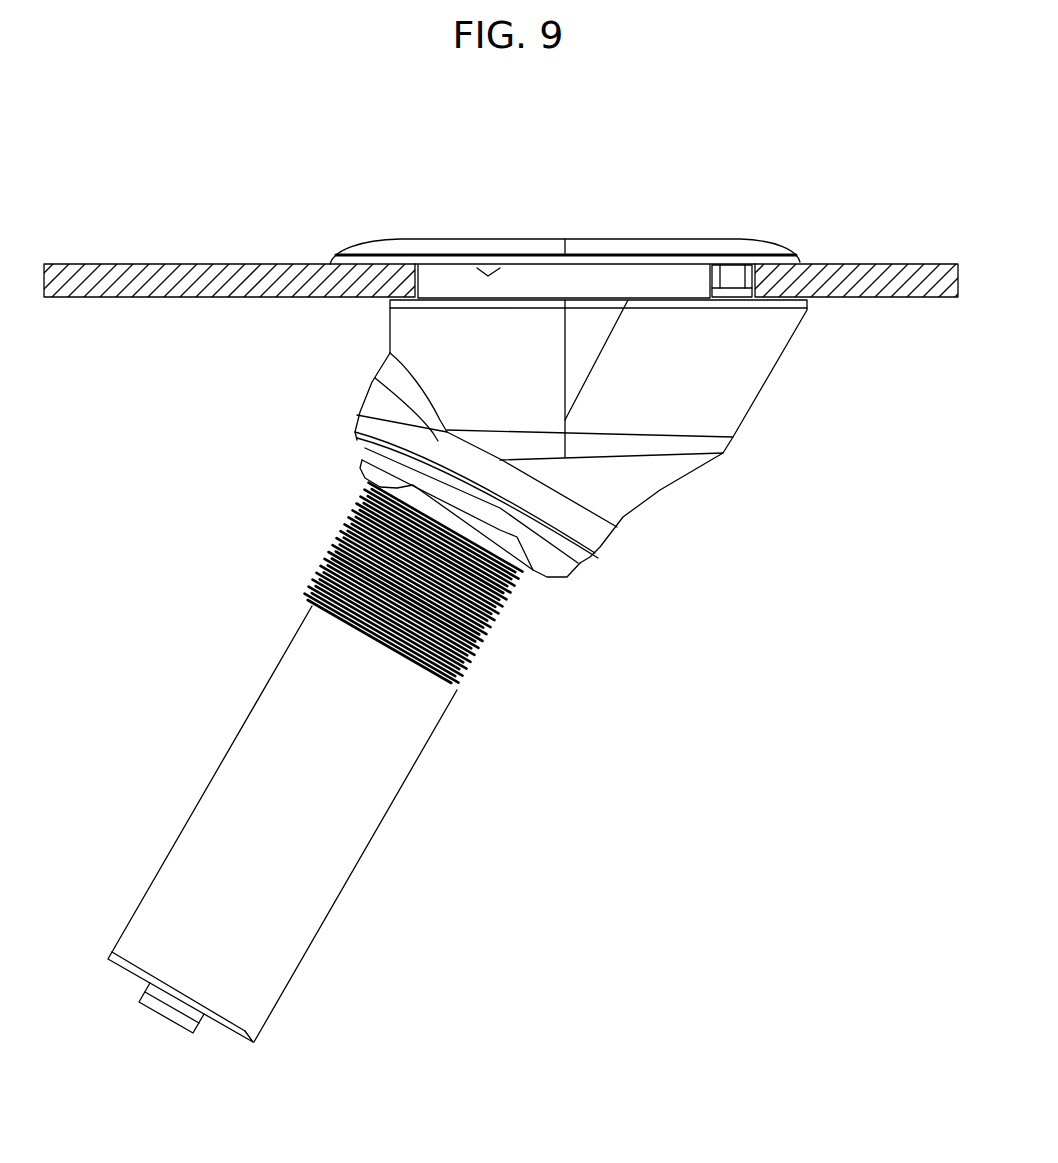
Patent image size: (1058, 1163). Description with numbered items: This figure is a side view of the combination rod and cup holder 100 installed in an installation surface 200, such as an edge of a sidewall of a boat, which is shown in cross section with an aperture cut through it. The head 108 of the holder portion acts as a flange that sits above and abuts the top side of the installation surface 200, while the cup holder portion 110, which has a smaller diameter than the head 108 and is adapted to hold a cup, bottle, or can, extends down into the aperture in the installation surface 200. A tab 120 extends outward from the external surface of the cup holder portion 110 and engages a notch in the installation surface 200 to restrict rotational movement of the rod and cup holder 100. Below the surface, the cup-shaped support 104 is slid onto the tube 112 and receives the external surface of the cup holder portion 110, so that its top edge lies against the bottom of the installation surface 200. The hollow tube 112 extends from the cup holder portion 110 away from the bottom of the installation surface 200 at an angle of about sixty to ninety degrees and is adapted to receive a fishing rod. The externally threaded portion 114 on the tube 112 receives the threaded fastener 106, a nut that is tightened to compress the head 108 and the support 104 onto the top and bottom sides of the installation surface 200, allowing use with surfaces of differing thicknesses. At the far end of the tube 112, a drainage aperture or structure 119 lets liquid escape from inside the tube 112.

The combination rod and cup holder 100 is at (240, 168).
The installation surface 200 is at (100, 266).
The head 108 is at (802, 258).
The cup holder portion 110 is at (443, 270).
The tab 120 is at (733, 270).
The support 104 is at (745, 401).
The threaded fastener 106 is at (588, 578).
The threaded portion 114 is at (468, 667).
The tube 112 is at (405, 776).
The drainage aperture 119 is at (172, 1030).